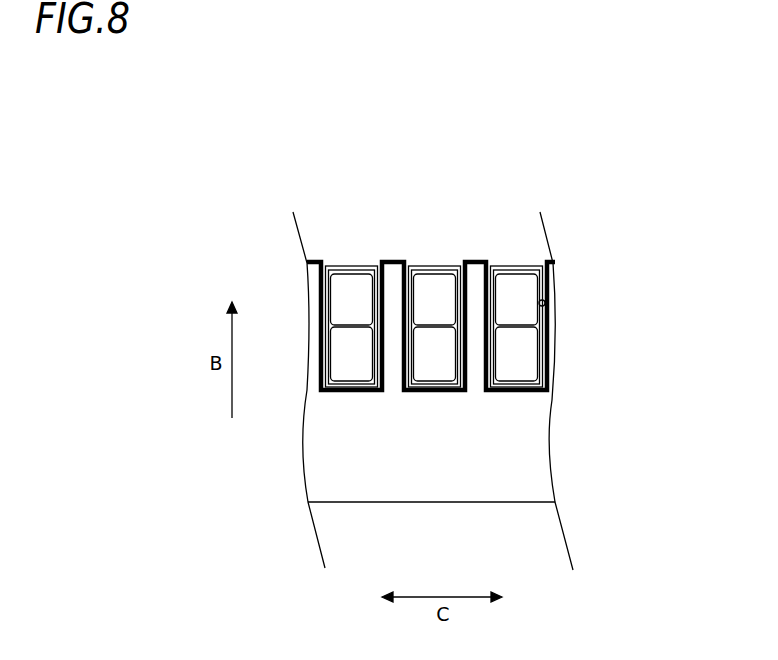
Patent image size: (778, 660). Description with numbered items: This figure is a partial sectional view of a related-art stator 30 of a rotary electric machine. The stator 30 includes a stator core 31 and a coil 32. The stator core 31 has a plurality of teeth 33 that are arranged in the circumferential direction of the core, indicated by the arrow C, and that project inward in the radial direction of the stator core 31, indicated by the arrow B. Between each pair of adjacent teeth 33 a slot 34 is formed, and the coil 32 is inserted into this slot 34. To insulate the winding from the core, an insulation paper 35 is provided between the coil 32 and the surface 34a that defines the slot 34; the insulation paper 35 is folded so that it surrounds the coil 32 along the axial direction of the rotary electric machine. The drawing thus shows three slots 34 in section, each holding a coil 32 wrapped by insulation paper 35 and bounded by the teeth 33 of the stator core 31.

The stator 30 is at (360, 190).
The stator core 31 is at (437, 503).
The coil 32 is at (343, 313).
The teeth 33 is at (393, 263).
The slot 34 is at (433, 261).
The surface defining the slot 34a is at (493, 360).
The insulation paper 35 is at (337, 265).